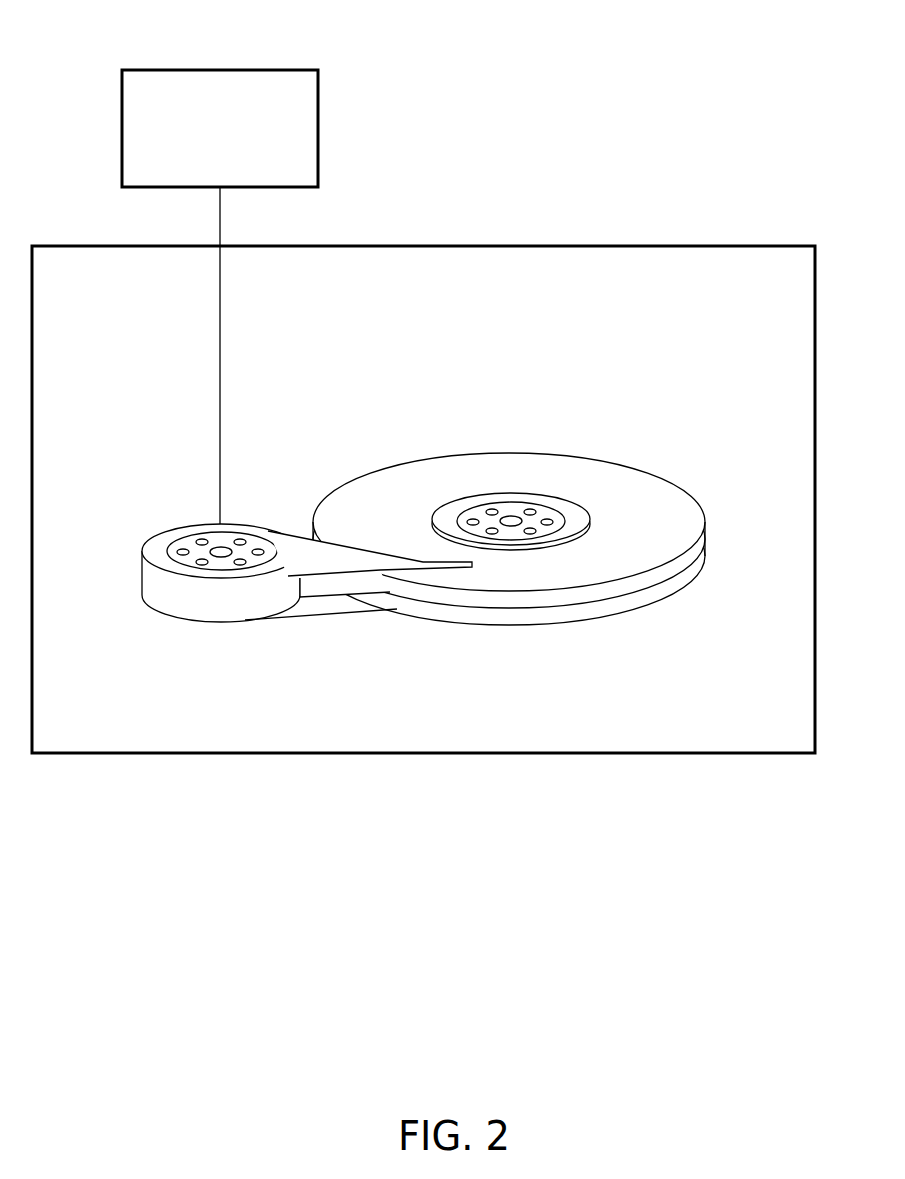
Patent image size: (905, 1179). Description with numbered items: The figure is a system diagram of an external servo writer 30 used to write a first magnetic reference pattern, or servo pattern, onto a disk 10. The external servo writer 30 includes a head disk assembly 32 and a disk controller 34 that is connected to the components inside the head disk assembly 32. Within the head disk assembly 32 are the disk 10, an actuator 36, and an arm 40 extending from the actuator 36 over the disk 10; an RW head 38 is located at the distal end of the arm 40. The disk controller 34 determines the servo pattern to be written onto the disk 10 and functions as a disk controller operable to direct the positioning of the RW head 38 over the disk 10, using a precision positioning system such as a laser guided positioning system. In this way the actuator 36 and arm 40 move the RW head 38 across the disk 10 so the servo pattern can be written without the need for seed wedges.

The disk 10 is at (697, 500).
The external servo writer 30 is at (626, 145).
The head disk assembly 32 is at (441, 323).
The disk controller 34 is at (238, 177).
The actuator 36 is at (152, 538).
The RW head 38 is at (443, 557).
The arm 40 is at (318, 538).